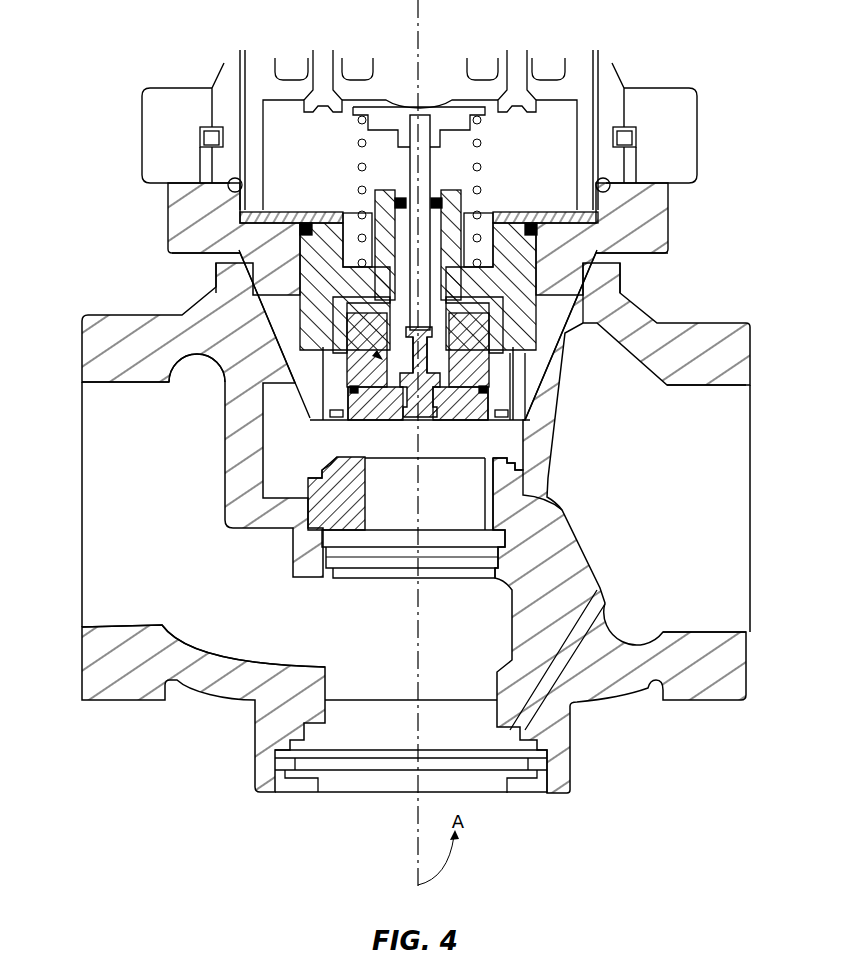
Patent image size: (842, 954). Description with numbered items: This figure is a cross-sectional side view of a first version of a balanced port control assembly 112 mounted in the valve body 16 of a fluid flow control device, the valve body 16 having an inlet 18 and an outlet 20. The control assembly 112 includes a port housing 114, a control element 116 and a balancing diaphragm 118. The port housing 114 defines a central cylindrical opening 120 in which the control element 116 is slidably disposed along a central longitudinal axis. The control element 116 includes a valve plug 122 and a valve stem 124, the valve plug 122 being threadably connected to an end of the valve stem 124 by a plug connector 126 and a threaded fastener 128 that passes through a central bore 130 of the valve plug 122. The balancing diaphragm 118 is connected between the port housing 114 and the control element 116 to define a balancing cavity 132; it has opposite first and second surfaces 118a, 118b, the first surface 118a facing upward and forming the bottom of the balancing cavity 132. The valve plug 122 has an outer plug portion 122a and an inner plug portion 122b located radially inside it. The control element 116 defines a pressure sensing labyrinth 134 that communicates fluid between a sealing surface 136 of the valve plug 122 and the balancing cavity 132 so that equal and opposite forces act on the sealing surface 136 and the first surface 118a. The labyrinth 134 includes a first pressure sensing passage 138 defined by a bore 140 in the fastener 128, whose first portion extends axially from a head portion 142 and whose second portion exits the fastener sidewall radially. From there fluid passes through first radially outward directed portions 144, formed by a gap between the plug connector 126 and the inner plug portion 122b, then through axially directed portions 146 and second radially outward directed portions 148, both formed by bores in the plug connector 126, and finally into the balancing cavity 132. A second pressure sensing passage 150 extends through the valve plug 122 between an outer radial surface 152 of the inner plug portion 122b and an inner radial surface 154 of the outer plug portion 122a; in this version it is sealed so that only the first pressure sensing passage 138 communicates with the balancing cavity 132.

The valve body 16 is at (73, 349).
The inlet 18 is at (96, 498).
The outlet 20 is at (733, 435).
The balanced port control assembly 112 is at (568, 256).
The port housing 114 is at (636, 272).
The control element 116 is at (310, 372).
The balancing diaphragm 118 is at (324, 377).
The first surface 118a is at (500, 352).
The second surface 118b is at (500, 363).
The central cylindrical opening 120 is at (522, 418).
The valve plug 122 is at (337, 465).
The outer plug portion 122a is at (520, 452).
The inner plug portion 122b is at (455, 425).
The valve stem 124 is at (428, 160).
The plug connector 126 is at (512, 250).
The threaded fastener 128 is at (406, 428).
The central bore 130 is at (422, 425).
The balancing cavity 132 is at (257, 292).
The pressure sensing labyrinth 134 is at (355, 392).
The sealing surface 136 is at (352, 535).
The first pressure sensing passage 138 is at (408, 548).
The bore 140 is at (407, 548).
The head portion 142 is at (372, 460).
The first radially outward directed portions 144 is at (505, 383).
The axially directed portions 146 is at (397, 287).
The second radially outward directed portions 148 is at (300, 229).
The second pressure sensing passage 150 is at (330, 412).
The outer radial surface 152 is at (327, 455).
The inner radial surface 154 is at (352, 425).